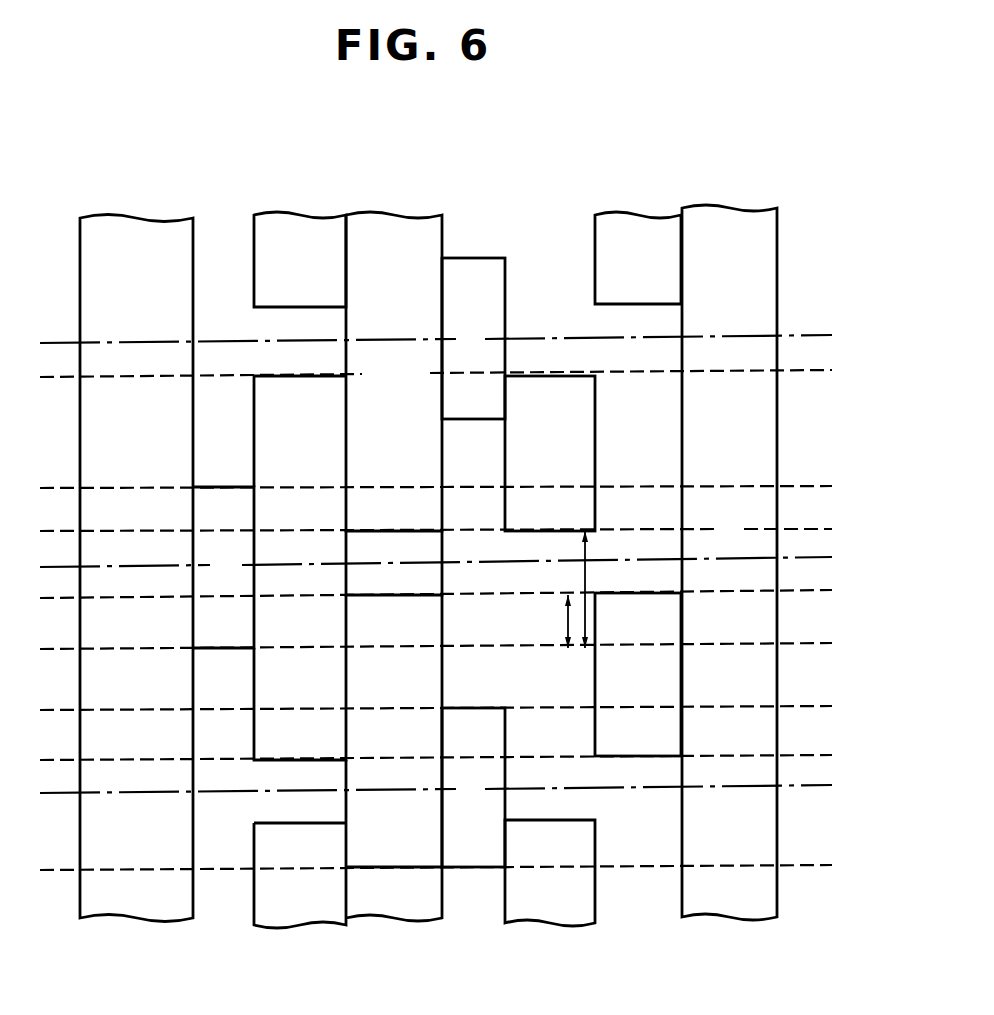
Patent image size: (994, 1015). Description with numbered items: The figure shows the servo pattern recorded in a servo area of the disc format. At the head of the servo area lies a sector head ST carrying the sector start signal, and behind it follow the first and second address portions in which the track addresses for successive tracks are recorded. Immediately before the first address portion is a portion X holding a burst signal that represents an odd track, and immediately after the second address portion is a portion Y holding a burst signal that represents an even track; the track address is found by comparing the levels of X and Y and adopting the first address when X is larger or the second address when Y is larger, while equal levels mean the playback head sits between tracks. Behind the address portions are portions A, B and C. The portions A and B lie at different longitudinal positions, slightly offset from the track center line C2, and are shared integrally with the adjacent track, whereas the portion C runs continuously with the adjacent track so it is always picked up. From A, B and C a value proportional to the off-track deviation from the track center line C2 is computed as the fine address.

The sector head ST is at (136, 568).
The portion Y is at (473, 562).
The portion A is at (550, 651).
The portion B is at (638, 484).
The portion C is at (729, 562).
The track center line C2 is at (797, 335).
The portion X is at (436, 566).